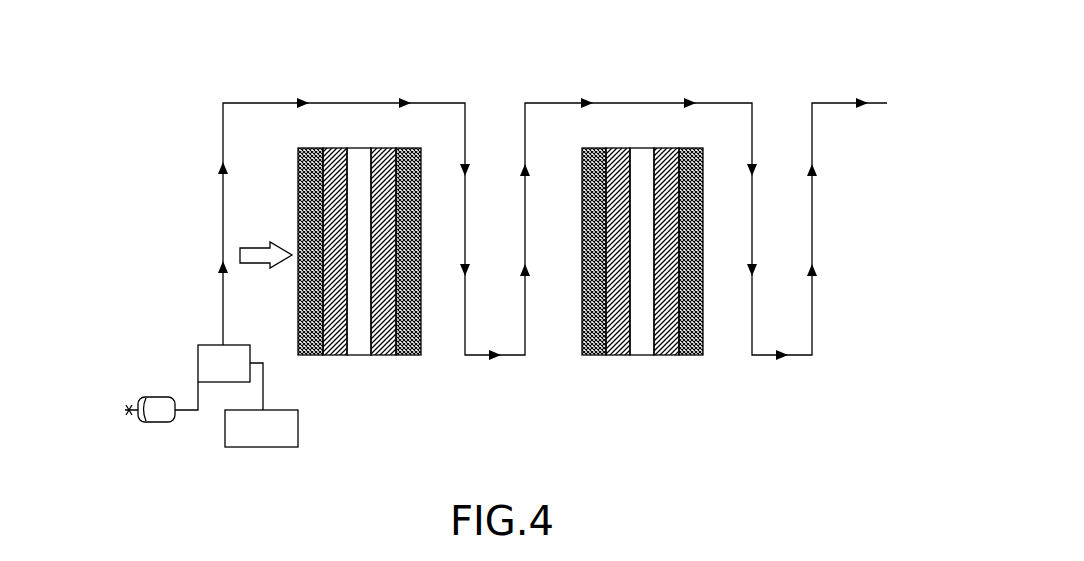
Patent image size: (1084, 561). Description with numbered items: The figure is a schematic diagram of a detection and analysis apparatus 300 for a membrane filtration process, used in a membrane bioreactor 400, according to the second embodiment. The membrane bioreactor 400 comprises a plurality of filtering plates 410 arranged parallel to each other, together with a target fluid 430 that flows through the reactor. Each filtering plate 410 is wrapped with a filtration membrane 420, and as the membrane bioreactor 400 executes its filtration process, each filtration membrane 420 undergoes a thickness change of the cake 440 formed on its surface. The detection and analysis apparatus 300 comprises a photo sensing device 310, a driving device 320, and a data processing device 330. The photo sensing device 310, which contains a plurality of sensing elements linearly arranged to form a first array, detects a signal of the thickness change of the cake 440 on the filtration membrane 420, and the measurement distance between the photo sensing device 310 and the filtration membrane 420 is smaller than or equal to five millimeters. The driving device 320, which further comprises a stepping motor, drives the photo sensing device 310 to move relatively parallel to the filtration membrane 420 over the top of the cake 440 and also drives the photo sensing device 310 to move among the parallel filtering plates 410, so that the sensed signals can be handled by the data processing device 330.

The membrane bioreactor 400 is at (205, 128).
The detection and analysis apparatus 300 is at (178, 316).
The photo sensing device 310 is at (198, 346).
The driving device 320 is at (150, 424).
The data processing device 330 is at (282, 440).
The filtering plate 410 is at (358, 357).
The filtration membrane 420 is at (385, 147).
The target fluid 430 is at (266, 272).
The cake 440 is at (308, 147).